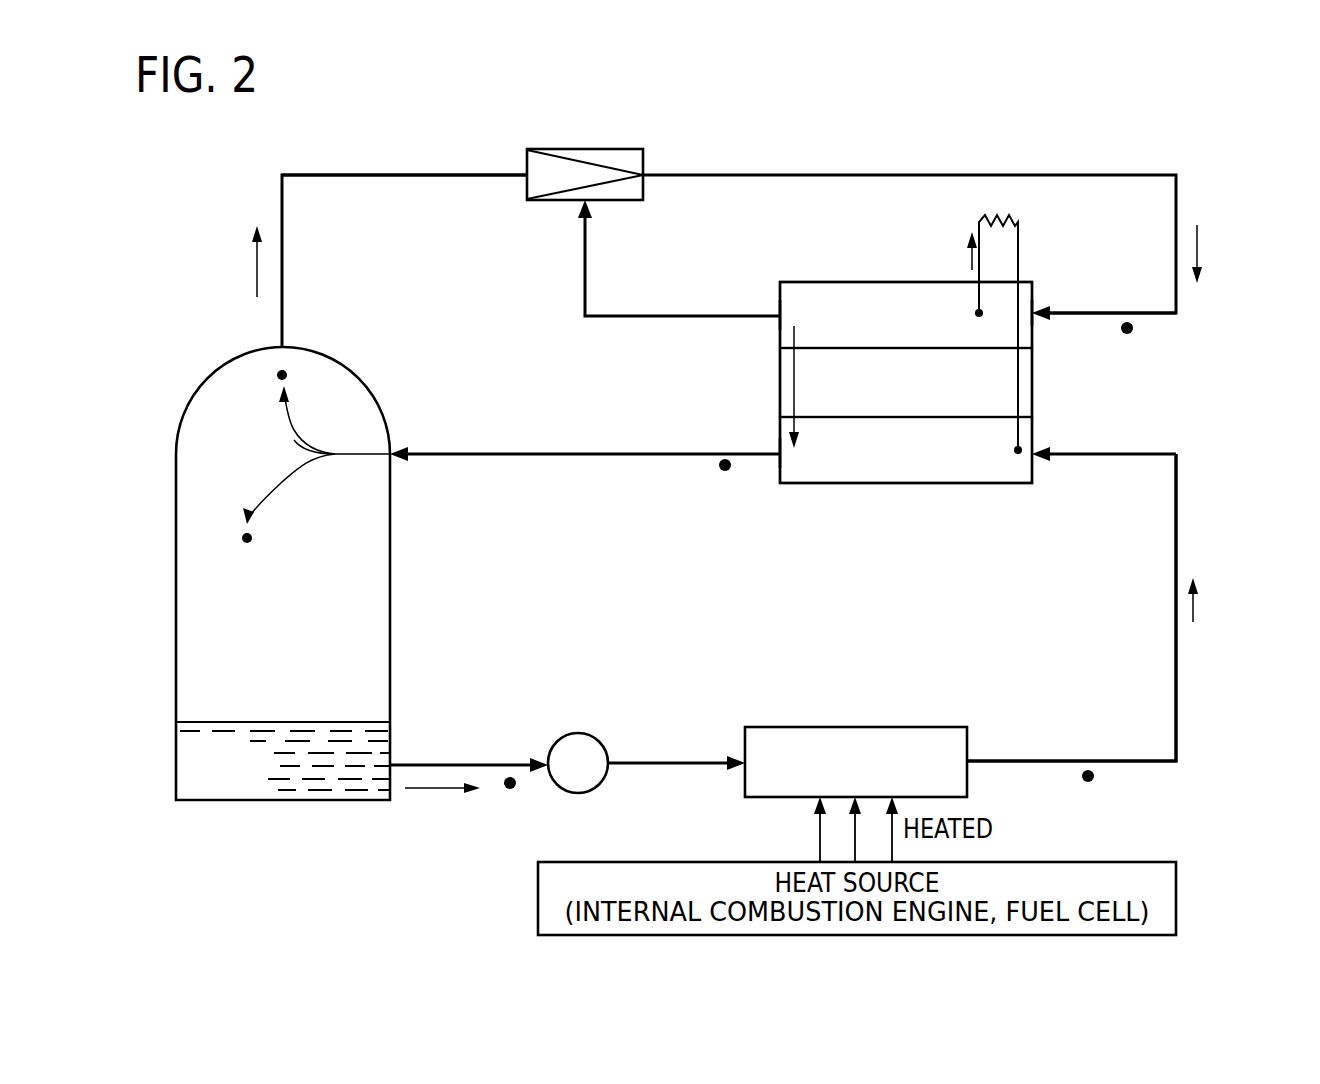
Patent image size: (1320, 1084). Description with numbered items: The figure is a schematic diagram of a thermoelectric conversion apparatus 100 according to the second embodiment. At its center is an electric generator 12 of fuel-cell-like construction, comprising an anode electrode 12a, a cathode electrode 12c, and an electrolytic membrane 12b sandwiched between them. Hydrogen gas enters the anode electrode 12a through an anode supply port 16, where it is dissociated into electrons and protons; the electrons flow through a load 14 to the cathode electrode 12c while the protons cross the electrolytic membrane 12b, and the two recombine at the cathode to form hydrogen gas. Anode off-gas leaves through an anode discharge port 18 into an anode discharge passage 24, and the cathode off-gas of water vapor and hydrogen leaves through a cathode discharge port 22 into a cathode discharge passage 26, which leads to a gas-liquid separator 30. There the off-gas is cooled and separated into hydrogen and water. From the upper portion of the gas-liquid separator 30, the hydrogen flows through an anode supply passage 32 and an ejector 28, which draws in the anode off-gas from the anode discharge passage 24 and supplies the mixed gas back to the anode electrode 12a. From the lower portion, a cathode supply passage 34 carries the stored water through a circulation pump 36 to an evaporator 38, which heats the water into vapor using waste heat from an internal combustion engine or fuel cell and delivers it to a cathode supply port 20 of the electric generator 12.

The thermoelectric conversion apparatus 100 is at (1212, 118).
The electric generator 12 is at (1042, 270).
The anode electrode 12a is at (825, 282).
The electrolytic membrane 12b is at (780, 370).
The cathode electrode 12c is at (826, 485).
The load 14 is at (997, 215).
The anode supply port 16 is at (1036, 303).
The anode discharge port 18 is at (779, 311).
The cathode supply port 20 is at (1036, 447).
The cathode discharge port 22 is at (779, 447).
The anode discharge passage 24 is at (650, 313).
The cathode discharge passage 26 is at (640, 453).
The ejector 28 is at (636, 148).
The gas-liquid separator 30 is at (176, 598).
The anode supply passage 32 is at (467, 172).
The cathode supply passage 34 is at (470, 764).
The circulation pump 36 is at (600, 736).
The evaporator 38 is at (947, 727).